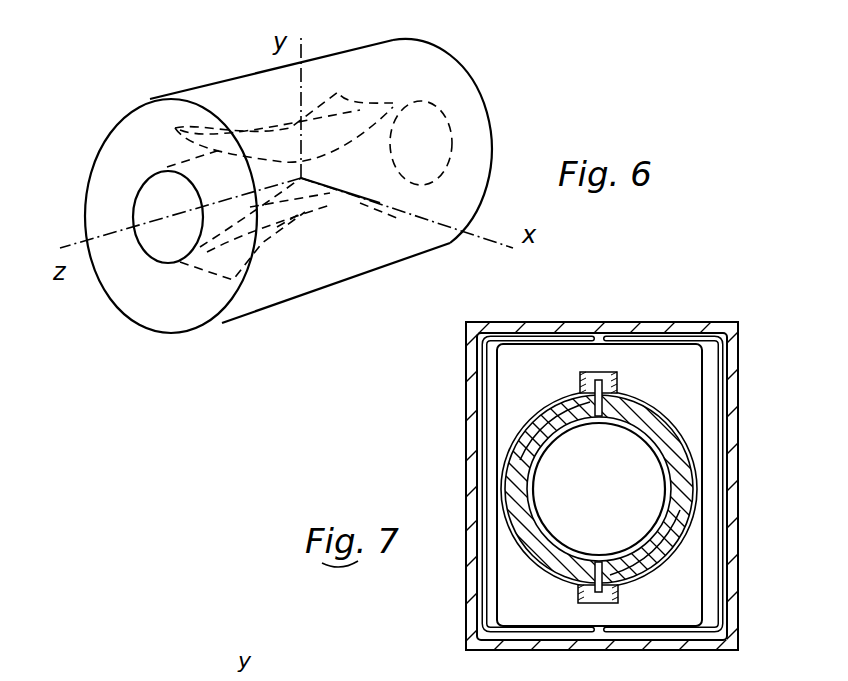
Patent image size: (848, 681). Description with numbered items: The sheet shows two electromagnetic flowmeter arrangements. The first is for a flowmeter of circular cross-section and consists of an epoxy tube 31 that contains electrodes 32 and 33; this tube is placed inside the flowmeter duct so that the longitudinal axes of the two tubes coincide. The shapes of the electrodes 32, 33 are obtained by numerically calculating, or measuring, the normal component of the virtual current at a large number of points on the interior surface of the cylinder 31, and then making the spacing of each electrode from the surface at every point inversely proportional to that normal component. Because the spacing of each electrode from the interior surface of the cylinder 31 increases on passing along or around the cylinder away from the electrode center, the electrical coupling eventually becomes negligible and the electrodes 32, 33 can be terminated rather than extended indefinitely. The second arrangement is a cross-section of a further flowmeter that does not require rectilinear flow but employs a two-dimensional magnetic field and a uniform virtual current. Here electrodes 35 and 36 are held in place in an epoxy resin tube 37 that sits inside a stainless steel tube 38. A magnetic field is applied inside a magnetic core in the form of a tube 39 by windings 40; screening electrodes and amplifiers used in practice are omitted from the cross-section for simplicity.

In FIG. 6, the epoxy tube 31 is at (247, 308).
In FIG. 6, the electrode 32 is at (270, 135).
In FIG. 6, the electrode 33 is at (305, 212).
In FIG. 7, the electrode 35 is at (648, 402).
In FIG. 7, the electrode 36 is at (540, 530).
In FIG. 7, the epoxy resin tube 37 is at (557, 565).
In FIG. 7, the stainless steel tube 38 is at (553, 405).
In FIG. 7, the magnetic core tube 39 is at (702, 322).
In FIG. 7, the windings 40 is at (492, 402).